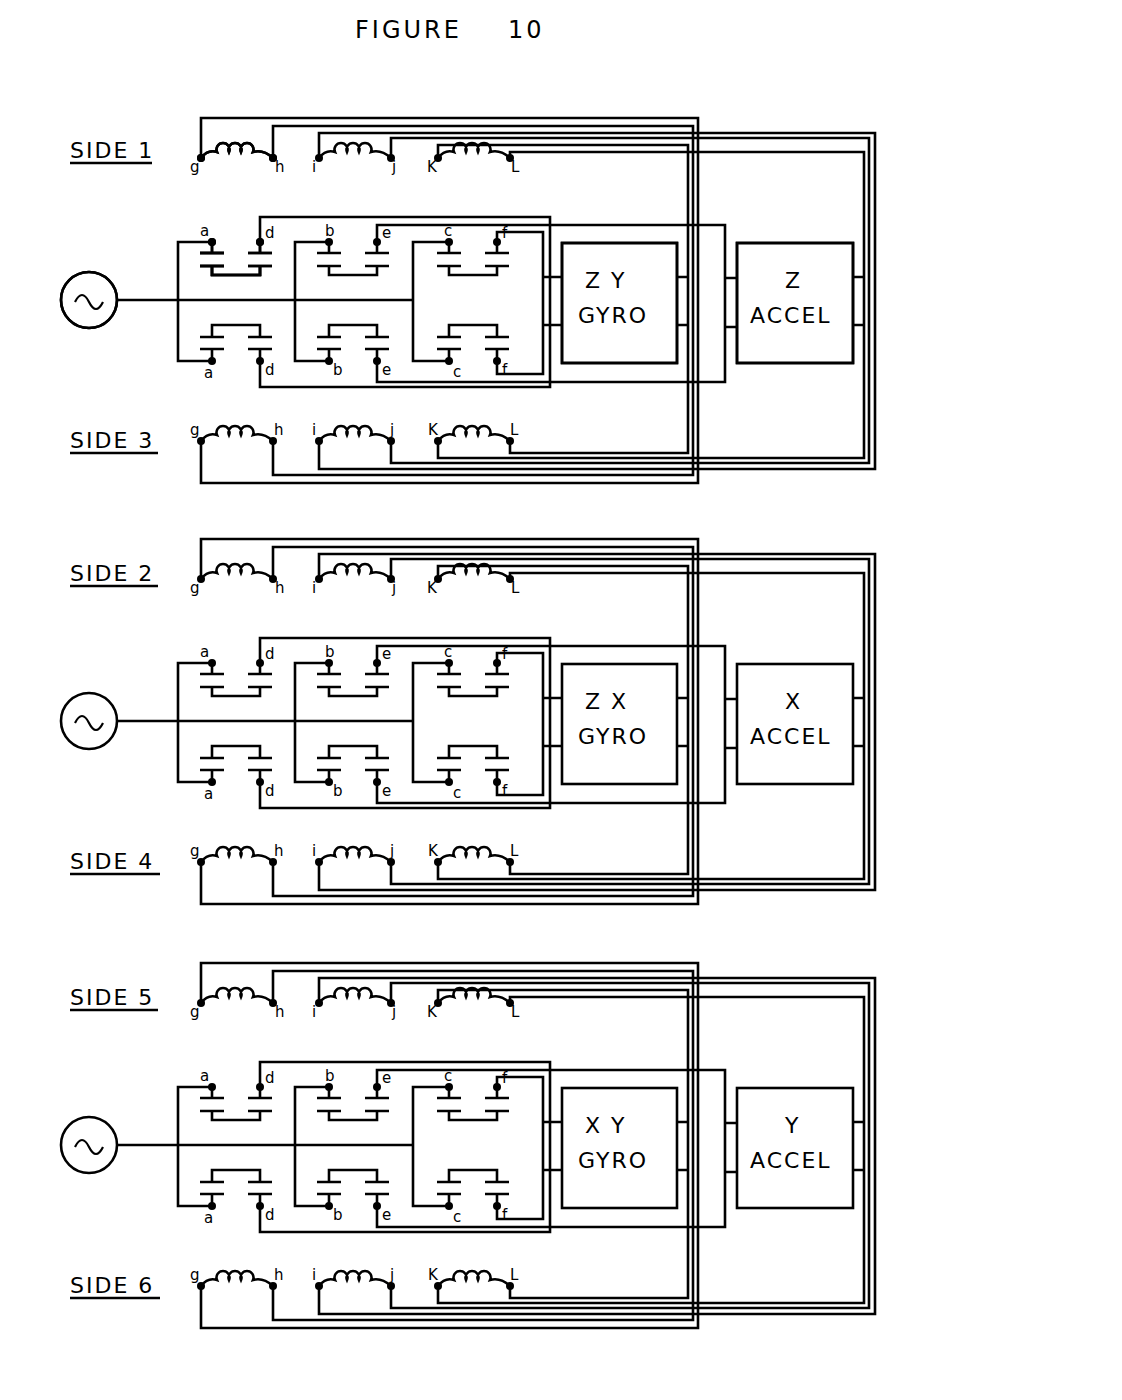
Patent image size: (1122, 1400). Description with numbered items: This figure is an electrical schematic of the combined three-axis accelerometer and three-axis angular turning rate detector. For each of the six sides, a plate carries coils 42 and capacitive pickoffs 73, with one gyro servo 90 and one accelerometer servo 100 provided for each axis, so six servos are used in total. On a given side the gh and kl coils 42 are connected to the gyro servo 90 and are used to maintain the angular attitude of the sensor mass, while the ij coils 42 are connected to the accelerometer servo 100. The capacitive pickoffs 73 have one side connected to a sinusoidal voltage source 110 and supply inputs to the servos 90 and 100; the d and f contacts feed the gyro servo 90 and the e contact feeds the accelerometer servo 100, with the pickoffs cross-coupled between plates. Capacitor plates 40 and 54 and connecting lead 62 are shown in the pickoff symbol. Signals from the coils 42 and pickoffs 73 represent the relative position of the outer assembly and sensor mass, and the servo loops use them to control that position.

The coils 42 is at (236, 156).
The capacitor plate 40 is at (207, 240).
The capacitive pickoffs 73 is at (205, 263).
The capacitor plate 54 is at (203, 266).
The connecting lead 62 is at (237, 273).
The gyro servo 90 is at (610, 258).
The accelerometer servo 100 is at (762, 263).
The sinusoidal voltage source 110 is at (90, 328).